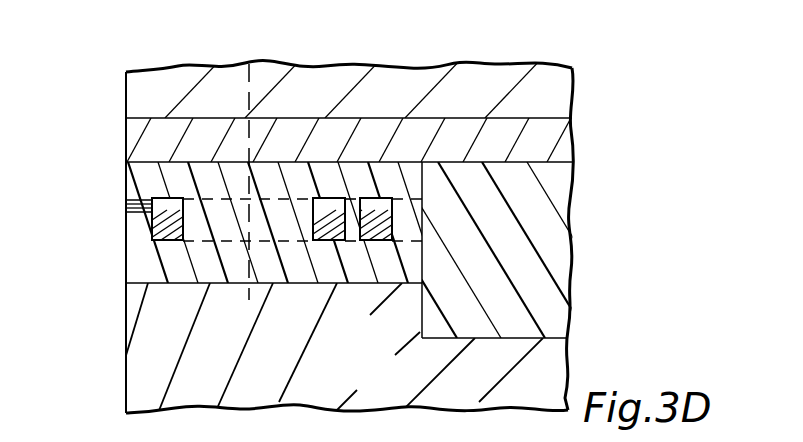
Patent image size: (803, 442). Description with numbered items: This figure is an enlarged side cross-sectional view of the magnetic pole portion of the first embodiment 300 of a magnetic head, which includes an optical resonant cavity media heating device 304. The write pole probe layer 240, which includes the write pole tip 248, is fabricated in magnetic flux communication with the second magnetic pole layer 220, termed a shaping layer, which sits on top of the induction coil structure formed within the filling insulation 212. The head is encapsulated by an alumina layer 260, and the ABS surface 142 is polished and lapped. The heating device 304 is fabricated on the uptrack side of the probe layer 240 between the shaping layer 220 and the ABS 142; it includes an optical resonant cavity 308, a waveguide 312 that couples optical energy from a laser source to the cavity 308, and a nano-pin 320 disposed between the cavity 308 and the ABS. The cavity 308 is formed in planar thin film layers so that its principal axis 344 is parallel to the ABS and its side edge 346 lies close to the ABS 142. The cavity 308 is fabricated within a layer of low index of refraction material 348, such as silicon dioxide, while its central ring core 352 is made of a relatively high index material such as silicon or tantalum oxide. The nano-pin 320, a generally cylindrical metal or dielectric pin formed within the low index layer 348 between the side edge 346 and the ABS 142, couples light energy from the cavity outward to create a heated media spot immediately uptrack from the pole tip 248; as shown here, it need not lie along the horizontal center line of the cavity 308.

The first embodiment 300 is at (200, 53).
The ABS surface 142 is at (126, 100).
The alumina layer 260 is at (552, 98).
The write pole tip 248 is at (122, 143).
The write pole probe layer 240 is at (560, 145).
The nano-pin 320 is at (141, 200).
The side edge 346 is at (147, 218).
The central ring core 352 is at (165, 222).
The layer of low index of refraction material 348 is at (150, 265).
The optical resonant cavity 308 is at (319, 198).
The waveguide 312 is at (366, 198).
The principal axis 344 is at (254, 62).
The second magnetic pole layer 220 is at (543, 218).
The optical resonant cavity media heating device 304 is at (178, 335).
The filling insulation 212 is at (392, 385).